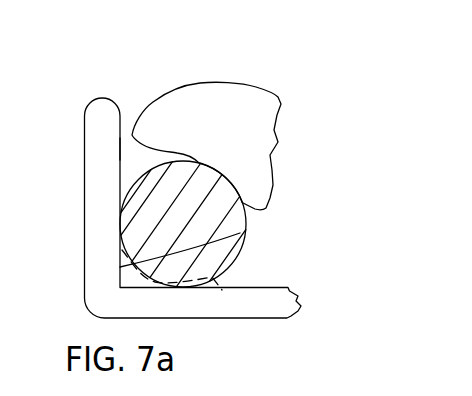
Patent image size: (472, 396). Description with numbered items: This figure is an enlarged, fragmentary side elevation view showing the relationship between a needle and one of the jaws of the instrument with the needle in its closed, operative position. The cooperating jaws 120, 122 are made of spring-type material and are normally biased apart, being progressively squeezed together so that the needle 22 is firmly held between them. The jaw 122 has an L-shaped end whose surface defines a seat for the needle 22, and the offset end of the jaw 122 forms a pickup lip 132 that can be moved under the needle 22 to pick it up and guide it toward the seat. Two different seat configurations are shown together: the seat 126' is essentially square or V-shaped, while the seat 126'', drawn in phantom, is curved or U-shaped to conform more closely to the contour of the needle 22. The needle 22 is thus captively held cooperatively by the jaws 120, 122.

The needle 22 is at (212, 253).
The jaw 120 is at (200, 102).
The jaw 122 is at (95, 285).
The seat 126' is at (228, 237).
The seat 126'' is at (209, 323).
The pickup lip 132 is at (122, 149).